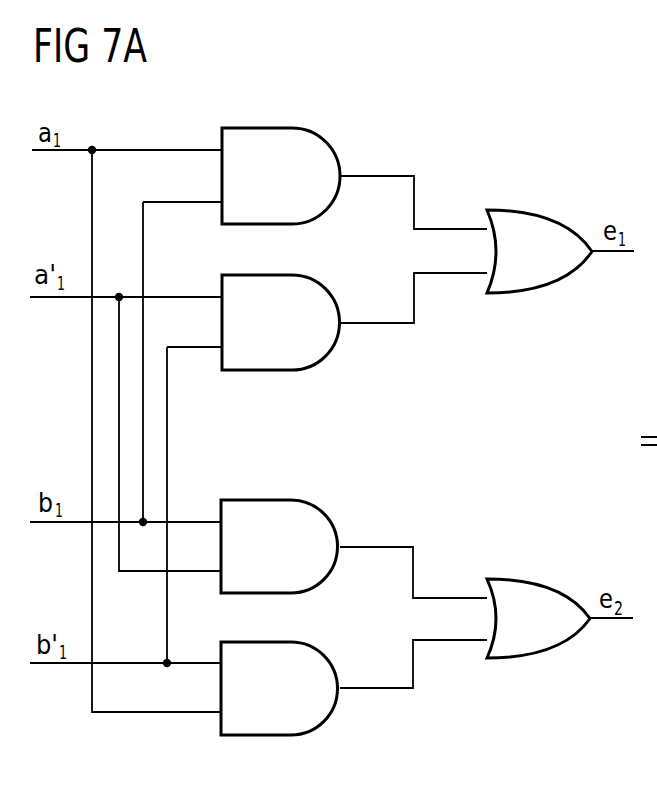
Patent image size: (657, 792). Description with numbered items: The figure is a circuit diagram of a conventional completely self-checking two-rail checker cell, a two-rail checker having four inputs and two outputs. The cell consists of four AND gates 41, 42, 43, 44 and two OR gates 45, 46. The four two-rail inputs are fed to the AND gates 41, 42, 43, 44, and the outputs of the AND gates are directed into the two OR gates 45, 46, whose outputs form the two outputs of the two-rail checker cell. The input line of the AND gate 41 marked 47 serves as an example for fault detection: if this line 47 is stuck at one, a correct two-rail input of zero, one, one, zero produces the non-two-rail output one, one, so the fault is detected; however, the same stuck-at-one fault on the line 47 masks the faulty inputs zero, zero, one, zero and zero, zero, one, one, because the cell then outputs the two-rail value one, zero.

The AND gate 41 is at (336, 160).
The AND gate 42 is at (334, 306).
The AND gate 43 is at (336, 532).
The AND gate 44 is at (336, 672).
The OR gate 45 is at (524, 209).
The OR gate 46 is at (523, 578).
The input line 47 is at (157, 150).